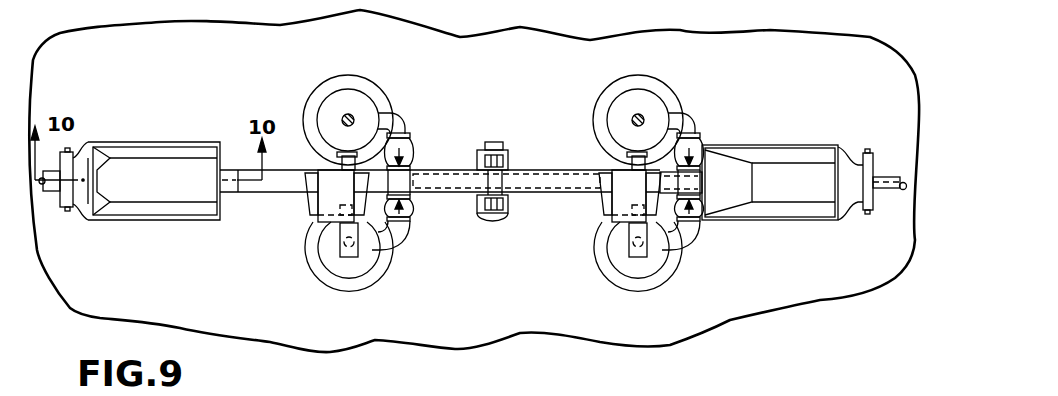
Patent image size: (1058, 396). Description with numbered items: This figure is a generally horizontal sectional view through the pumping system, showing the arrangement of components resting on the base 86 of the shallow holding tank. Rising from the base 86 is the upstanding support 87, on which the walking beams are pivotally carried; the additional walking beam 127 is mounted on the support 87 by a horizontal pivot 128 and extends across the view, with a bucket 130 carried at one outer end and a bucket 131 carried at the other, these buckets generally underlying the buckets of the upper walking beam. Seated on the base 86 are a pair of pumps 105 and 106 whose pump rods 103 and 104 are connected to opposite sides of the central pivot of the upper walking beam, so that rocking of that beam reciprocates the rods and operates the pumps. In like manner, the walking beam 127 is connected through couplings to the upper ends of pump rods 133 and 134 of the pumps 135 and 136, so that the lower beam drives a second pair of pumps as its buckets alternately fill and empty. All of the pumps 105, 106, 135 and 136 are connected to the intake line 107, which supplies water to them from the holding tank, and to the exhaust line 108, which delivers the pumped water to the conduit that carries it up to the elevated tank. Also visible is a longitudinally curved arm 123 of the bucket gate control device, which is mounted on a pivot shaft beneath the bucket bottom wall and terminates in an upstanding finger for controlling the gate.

The base 86 is at (753, 303).
The upstanding support 87 is at (497, 218).
The pump rod 103 is at (357, 112).
The pump rod 104 is at (645, 114).
The pump 105 is at (333, 100).
The pump 106 is at (630, 97).
The intake line 107 is at (46, 185).
The exhaust line 108 is at (901, 188).
The arm 123 is at (878, 177).
The additional walking beam 127 is at (545, 194).
The horizontal pivot 128 is at (494, 142).
The bucket 130 is at (200, 138).
The bucket 131 is at (804, 138).
The pump rod 133 is at (336, 247).
The pump rod 134 is at (622, 250).
The pump 135 is at (353, 265).
The pump 136 is at (638, 263).